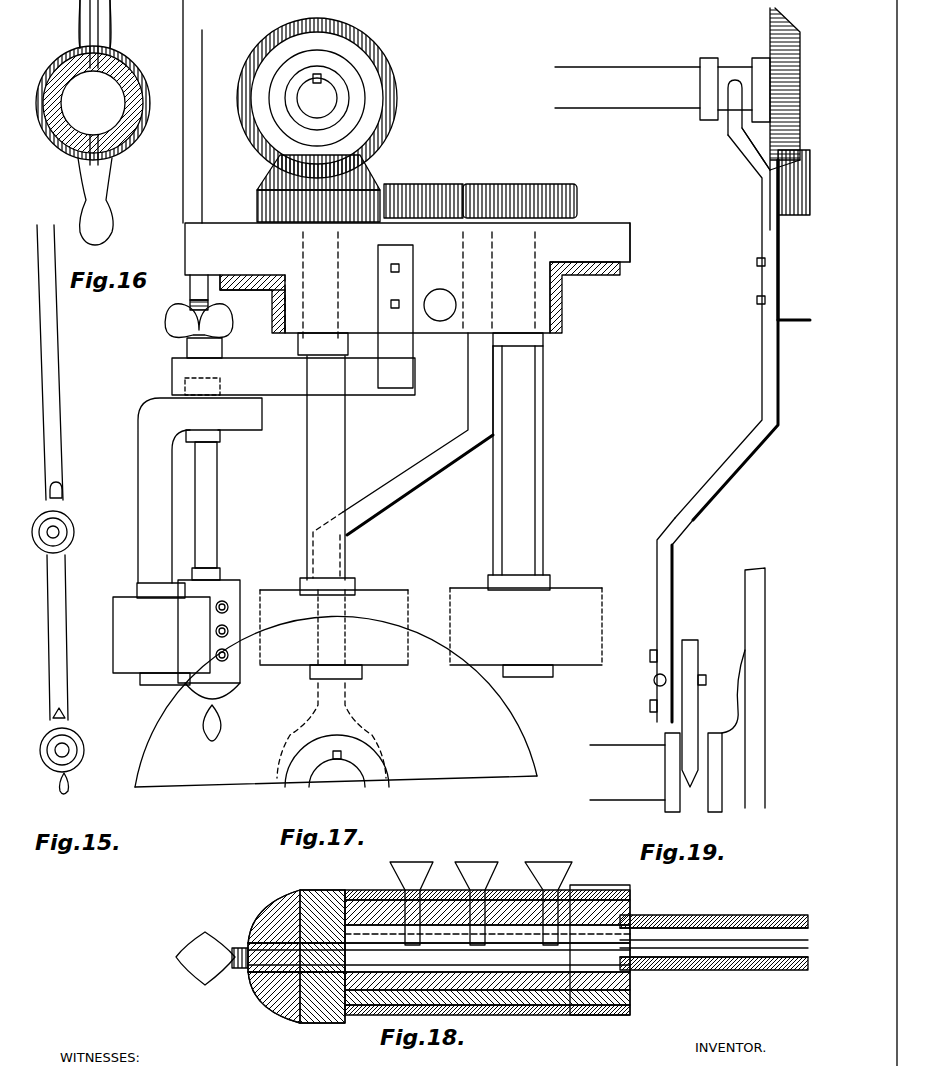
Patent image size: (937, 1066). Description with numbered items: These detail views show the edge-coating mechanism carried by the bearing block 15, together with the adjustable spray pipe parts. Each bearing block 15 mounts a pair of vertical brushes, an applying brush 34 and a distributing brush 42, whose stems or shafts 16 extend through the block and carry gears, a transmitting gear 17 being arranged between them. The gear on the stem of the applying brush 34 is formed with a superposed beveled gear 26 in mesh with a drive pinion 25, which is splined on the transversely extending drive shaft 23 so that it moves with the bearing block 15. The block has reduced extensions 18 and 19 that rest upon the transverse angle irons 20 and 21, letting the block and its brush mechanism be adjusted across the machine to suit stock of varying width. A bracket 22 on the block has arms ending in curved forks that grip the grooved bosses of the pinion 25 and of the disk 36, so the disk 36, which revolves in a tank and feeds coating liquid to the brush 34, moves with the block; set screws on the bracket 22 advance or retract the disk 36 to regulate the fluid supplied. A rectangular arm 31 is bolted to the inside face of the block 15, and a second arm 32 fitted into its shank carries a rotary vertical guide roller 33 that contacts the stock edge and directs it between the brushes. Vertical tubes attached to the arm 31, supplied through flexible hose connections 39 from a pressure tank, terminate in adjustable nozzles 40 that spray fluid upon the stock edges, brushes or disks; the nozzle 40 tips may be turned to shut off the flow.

In FIG. 17, the bearing block 15 is at (414, 293).
In FIG. 19, the bearing block 15 is at (791, 240).
In FIG. 17, the brush stem or shaft 16 is at (345, 454).
In FIG. 17, the transmitting gear 17 is at (257, 206).
In FIG. 19, the transmitting gear 17 is at (778, 192).
In FIG. 17, the reduced extension 18 is at (391, 276).
In FIG. 17, the reduced extension 19 is at (626, 228).
In FIG. 17, the angle iron 20 is at (252, 304).
In FIG. 17, the angle iron 21 is at (585, 297).
In FIG. 17, the bracket 22 is at (468, 360).
In FIG. 19, the bracket 22 is at (745, 142).
In FIG. 17, the drive shaft 23 is at (315, 80).
In FIG. 19, the drive shaft 23 is at (726, 118).
In FIG. 17, the drive pinion 25 is at (368, 40).
In FIG. 19, the drive pinion 25 is at (770, 14).
In FIG. 17, the beveled gear 26 is at (268, 170).
In FIG. 19, the beveled gear 26 is at (770, 168).
In FIG. 17, the rectangular arm 31 is at (175, 312).
In FIG. 17, the second rectangular arm 32 is at (138, 478).
In FIG. 17, the guide roller 33 is at (113, 636).
In FIG. 17, the applying brush 34 is at (334, 634).
In FIG. 17, the disk 36 is at (318, 700).
In FIG. 19, the disk 36 is at (618, 748).
In FIG. 17, the flexible hose connection 39 is at (217, 500).
In FIG. 18, the flexible hose connection 39 is at (722, 912).
In FIG. 16, the adjustable nozzle 40 is at (90, 190).
In FIG. 15, the adjustable nozzle 40 is at (58, 383).
In FIG. 17, the adjustable nozzle 40 is at (240, 588).
In FIG. 18, the adjustable nozzle 40 is at (478, 862).
In FIG. 17, the distributing brush 42 is at (526, 632).